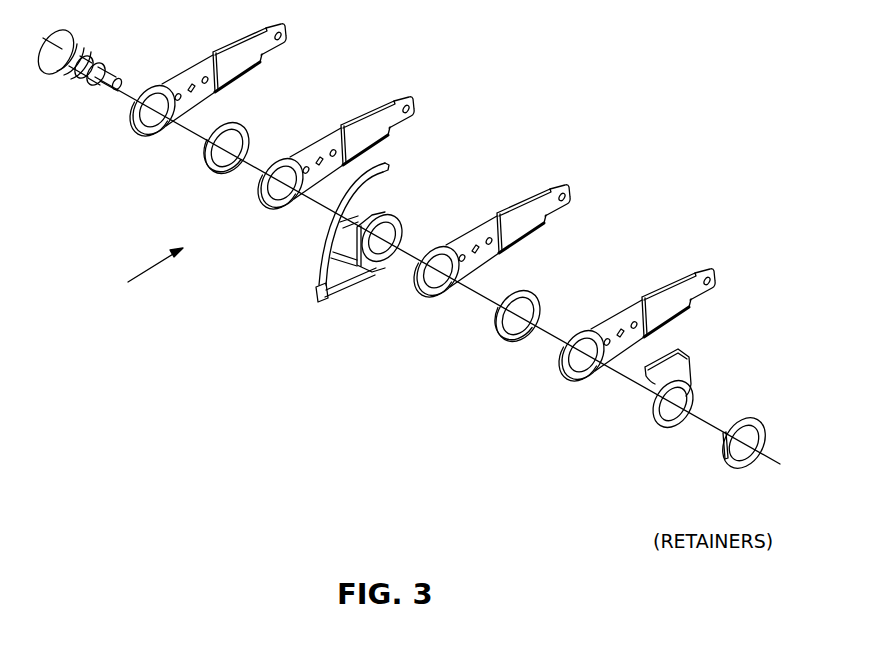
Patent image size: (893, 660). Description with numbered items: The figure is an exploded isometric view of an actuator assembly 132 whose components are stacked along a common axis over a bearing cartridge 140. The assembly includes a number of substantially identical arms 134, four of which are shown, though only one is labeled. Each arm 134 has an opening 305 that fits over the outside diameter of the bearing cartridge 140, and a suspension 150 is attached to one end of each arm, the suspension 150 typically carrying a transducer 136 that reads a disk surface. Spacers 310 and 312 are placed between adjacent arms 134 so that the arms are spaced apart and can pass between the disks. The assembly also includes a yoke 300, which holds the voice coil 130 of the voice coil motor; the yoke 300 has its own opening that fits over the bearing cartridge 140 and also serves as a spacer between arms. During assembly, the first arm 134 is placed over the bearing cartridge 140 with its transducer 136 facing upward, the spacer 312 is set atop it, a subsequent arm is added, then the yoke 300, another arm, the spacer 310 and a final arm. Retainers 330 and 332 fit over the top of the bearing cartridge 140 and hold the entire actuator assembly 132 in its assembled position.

The voice coil 130 is at (318, 280).
The actuator assembly 132 is at (134, 278).
The arm 134 is at (239, 104).
The transducer 136 is at (306, 37).
The bearing cartridge 140 is at (63, 82).
The suspension 150 is at (225, 51).
The yoke 300 is at (335, 260).
The opening 305 is at (154, 138).
The spacer 310 is at (510, 343).
The spacer 312 is at (243, 125).
The retainer 330 is at (673, 433).
The retainer 332 is at (742, 468).